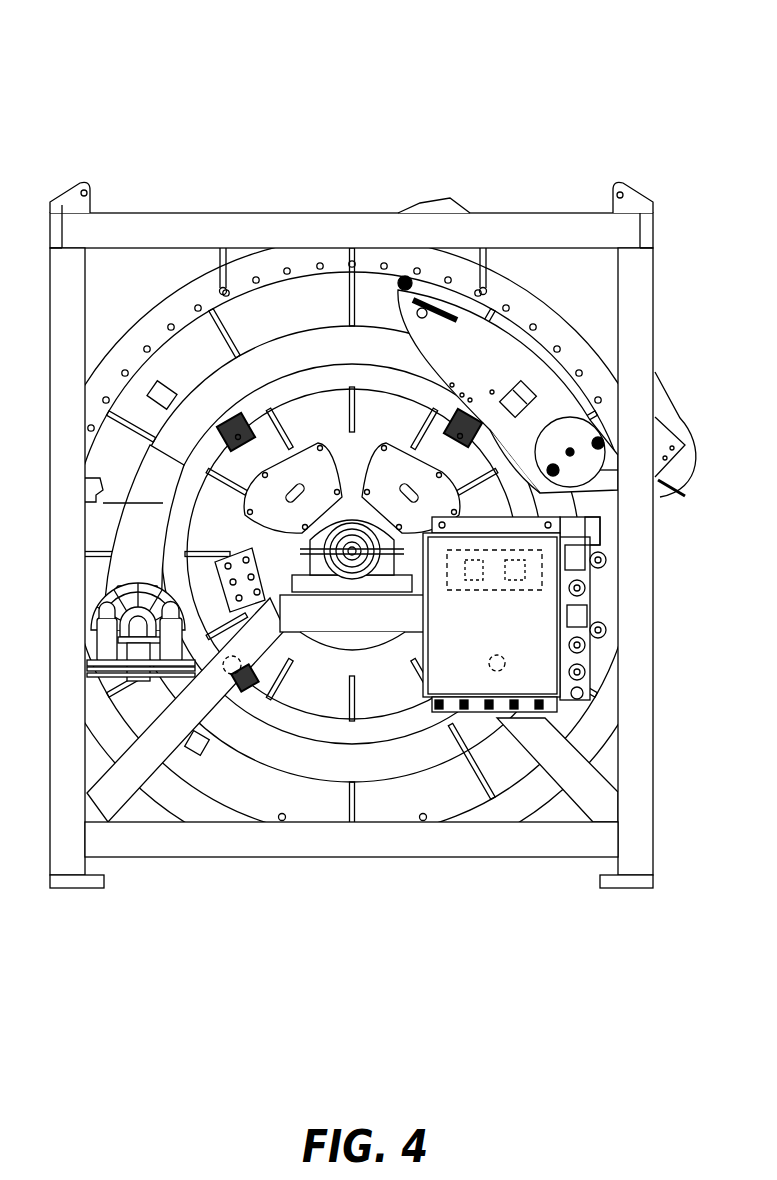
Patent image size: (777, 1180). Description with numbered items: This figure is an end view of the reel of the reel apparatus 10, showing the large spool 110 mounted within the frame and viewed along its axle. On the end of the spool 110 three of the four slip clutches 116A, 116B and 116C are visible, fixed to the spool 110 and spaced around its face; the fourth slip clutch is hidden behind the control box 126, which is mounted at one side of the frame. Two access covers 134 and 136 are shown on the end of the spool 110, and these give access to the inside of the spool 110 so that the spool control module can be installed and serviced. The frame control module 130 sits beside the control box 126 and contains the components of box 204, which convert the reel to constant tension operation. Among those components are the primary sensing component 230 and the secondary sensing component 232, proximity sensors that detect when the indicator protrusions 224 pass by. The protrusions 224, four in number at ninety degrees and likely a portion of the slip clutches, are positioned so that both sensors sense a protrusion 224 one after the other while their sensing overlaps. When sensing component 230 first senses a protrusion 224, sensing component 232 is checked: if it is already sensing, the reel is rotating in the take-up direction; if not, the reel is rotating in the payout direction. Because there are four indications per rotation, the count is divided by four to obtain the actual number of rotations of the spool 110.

The reel apparatus 10 is at (652, 80).
The spool 110 is at (314, 314).
The slip clutch 116A is at (255, 678).
The slip clutch 116B is at (262, 407).
The slip clutch 116C is at (455, 417).
The control box 126 is at (571, 614).
The frame control module 130 is at (587, 525).
The access cover 134 is at (275, 505).
The access cover 136 is at (390, 477).
The frame control module components 204 is at (535, 575).
The indicator protrusion 224 is at (246, 448).
The primary sensing component 230 is at (475, 567).
The secondary sensing component 232 is at (513, 567).